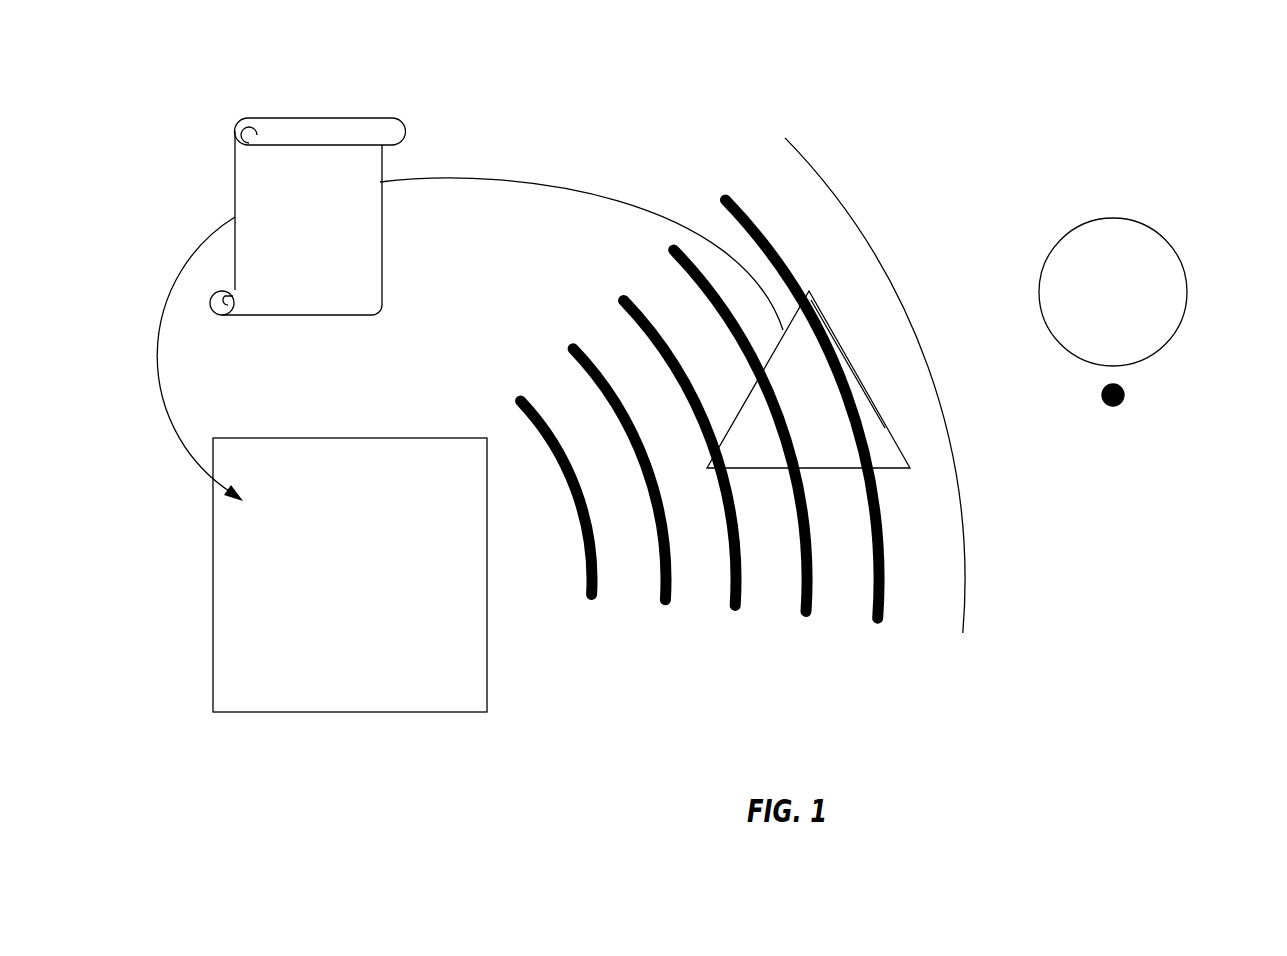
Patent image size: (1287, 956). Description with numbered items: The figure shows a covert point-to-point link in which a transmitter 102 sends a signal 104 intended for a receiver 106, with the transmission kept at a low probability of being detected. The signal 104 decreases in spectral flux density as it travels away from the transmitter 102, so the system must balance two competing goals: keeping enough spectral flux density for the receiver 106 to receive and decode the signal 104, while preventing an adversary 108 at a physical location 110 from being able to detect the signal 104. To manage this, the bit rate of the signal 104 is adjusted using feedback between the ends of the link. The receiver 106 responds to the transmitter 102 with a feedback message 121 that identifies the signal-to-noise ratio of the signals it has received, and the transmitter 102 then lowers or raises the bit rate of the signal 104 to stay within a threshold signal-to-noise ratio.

The transmitter 102 is at (350, 575).
The signal 104 is at (758, 668).
The receiver 106 is at (885, 470).
The adversary 108 is at (1131, 218).
The physical location 110 is at (1124, 398).
The feedback message 121 is at (349, 118).